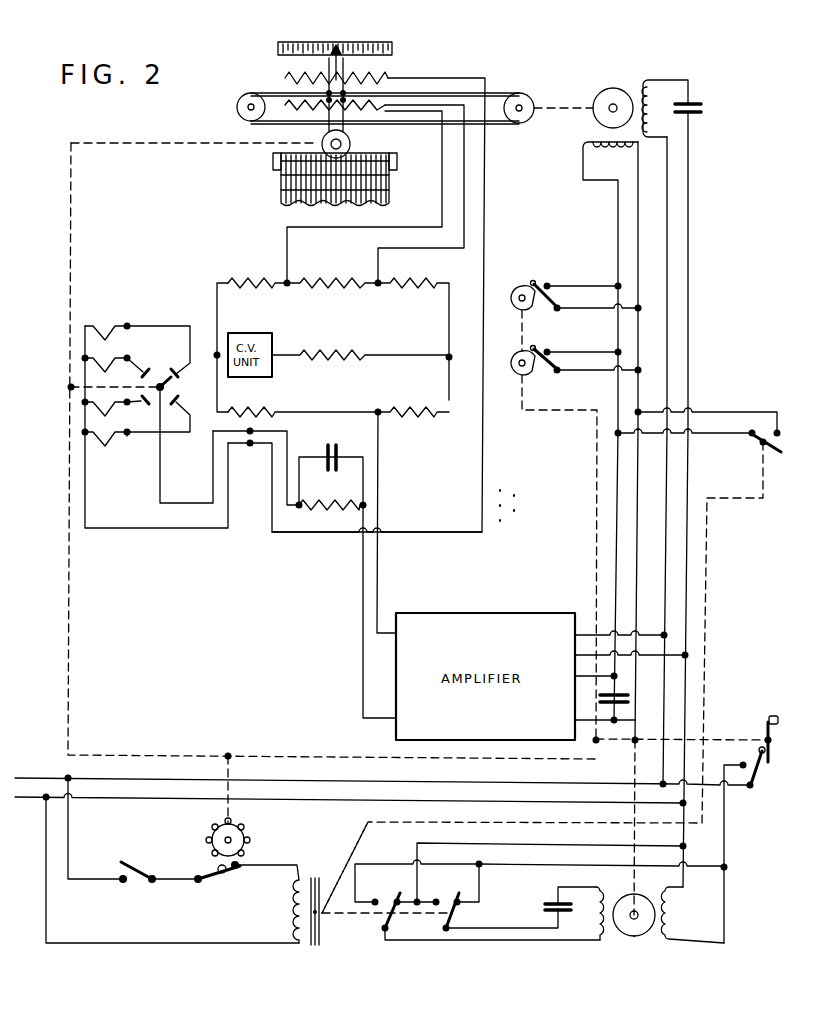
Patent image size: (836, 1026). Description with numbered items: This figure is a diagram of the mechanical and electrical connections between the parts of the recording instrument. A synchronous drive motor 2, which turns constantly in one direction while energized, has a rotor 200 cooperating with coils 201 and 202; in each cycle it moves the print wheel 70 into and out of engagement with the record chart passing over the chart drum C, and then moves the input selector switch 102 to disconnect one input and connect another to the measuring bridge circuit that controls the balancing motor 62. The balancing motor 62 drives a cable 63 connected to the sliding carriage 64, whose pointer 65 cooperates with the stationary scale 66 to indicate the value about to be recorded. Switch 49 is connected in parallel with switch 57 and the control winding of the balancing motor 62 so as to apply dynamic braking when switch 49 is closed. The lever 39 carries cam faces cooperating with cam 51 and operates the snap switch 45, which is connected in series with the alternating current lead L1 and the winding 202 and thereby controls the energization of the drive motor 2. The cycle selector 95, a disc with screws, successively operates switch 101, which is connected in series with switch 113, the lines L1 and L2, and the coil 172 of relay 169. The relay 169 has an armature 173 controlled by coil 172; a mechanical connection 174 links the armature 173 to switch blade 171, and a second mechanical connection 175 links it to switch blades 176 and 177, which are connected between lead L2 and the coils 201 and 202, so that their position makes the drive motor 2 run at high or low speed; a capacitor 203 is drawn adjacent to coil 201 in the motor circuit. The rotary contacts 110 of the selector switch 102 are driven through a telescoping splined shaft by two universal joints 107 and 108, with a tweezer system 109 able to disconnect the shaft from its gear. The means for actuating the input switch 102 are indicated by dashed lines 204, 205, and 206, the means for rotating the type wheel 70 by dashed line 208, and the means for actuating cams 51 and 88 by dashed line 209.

The drive motor 2 is at (621, 944).
The lever 39 is at (765, 731).
The snap electric switch 45 is at (755, 772).
The switch 49 is at (538, 348).
The cam 51 is at (510, 296).
The switch 57 is at (537, 282).
The balancing motor 62 is at (596, 88).
The cable 63 is at (513, 93).
The sliding carriage 64 is at (334, 118).
The pointer 65 is at (336, 47).
The stationary scale 66 is at (372, 42).
The print wheel 70 is at (351, 146).
The cam 88 is at (515, 358).
The cycle selector 95 is at (252, 832).
The electric switch 101 is at (227, 881).
The input selector switch 102 is at (163, 312).
The universal joint 107 is at (172, 367).
The universal joint 108 is at (181, 436).
The tweezer system 109 is at (127, 436).
The rotary contacts 110 is at (168, 386).
The switch 113 is at (140, 871).
The relay 169 is at (326, 961).
The switch blade 171 is at (778, 454).
The relay coil 172 is at (296, 909).
The armature 173 is at (314, 878).
The mechanical connection 174 is at (366, 824).
The second mechanical connection 175 is at (356, 916).
The switch blade 176 is at (395, 898).
The switch blade 177 is at (455, 897).
The rotor 200 is at (640, 932).
The coil 201 is at (594, 905).
The winding 202 is at (672, 916).
The capacitor 203 is at (543, 906).
The dashed line 204 is at (634, 770).
The dashed line 205 is at (140, 755).
The dashed line 206 is at (100, 387).
The dashed line 208 is at (170, 143).
The dashed line 209 is at (596, 562).
The chart drum C is at (273, 161).
The alternating current lead L1 is at (37, 777).
The alternating current lead L2 is at (37, 798).